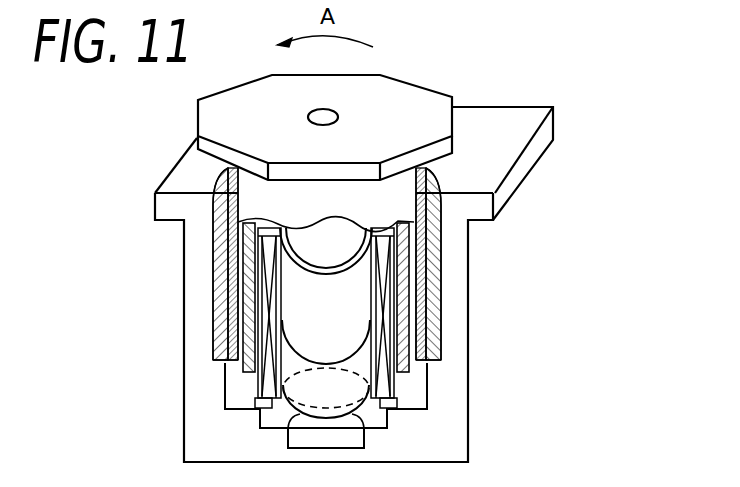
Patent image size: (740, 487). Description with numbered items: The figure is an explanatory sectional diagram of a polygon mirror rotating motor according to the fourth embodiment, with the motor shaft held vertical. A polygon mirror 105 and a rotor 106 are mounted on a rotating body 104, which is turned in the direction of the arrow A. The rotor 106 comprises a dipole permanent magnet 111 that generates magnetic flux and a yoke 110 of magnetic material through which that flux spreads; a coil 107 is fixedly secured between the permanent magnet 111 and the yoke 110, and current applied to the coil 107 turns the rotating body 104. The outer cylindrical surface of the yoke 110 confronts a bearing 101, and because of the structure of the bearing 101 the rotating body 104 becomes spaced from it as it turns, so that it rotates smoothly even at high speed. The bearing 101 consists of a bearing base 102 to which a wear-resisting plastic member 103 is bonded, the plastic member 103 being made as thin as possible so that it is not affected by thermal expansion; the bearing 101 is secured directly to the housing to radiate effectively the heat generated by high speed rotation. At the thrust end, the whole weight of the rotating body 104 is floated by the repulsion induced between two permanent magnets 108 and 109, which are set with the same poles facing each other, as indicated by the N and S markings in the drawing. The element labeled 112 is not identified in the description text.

The bearing 101 is at (437, 268).
The bearing base 102 is at (433, 307).
The wear-resisting plastic member 103 is at (437, 343).
The rotating body 104 is at (262, 203).
The polygon mirror 105 is at (415, 97).
The rotor 106 is at (353, 233).
The coil 107 is at (257, 393).
The permanent magnet 108 is at (352, 405).
The permanent magnet 109 is at (288, 438).
The yoke 110 is at (242, 292).
The dipole permanent magnet 111 is at (282, 325).
The yoke 112 is at (453, 402).